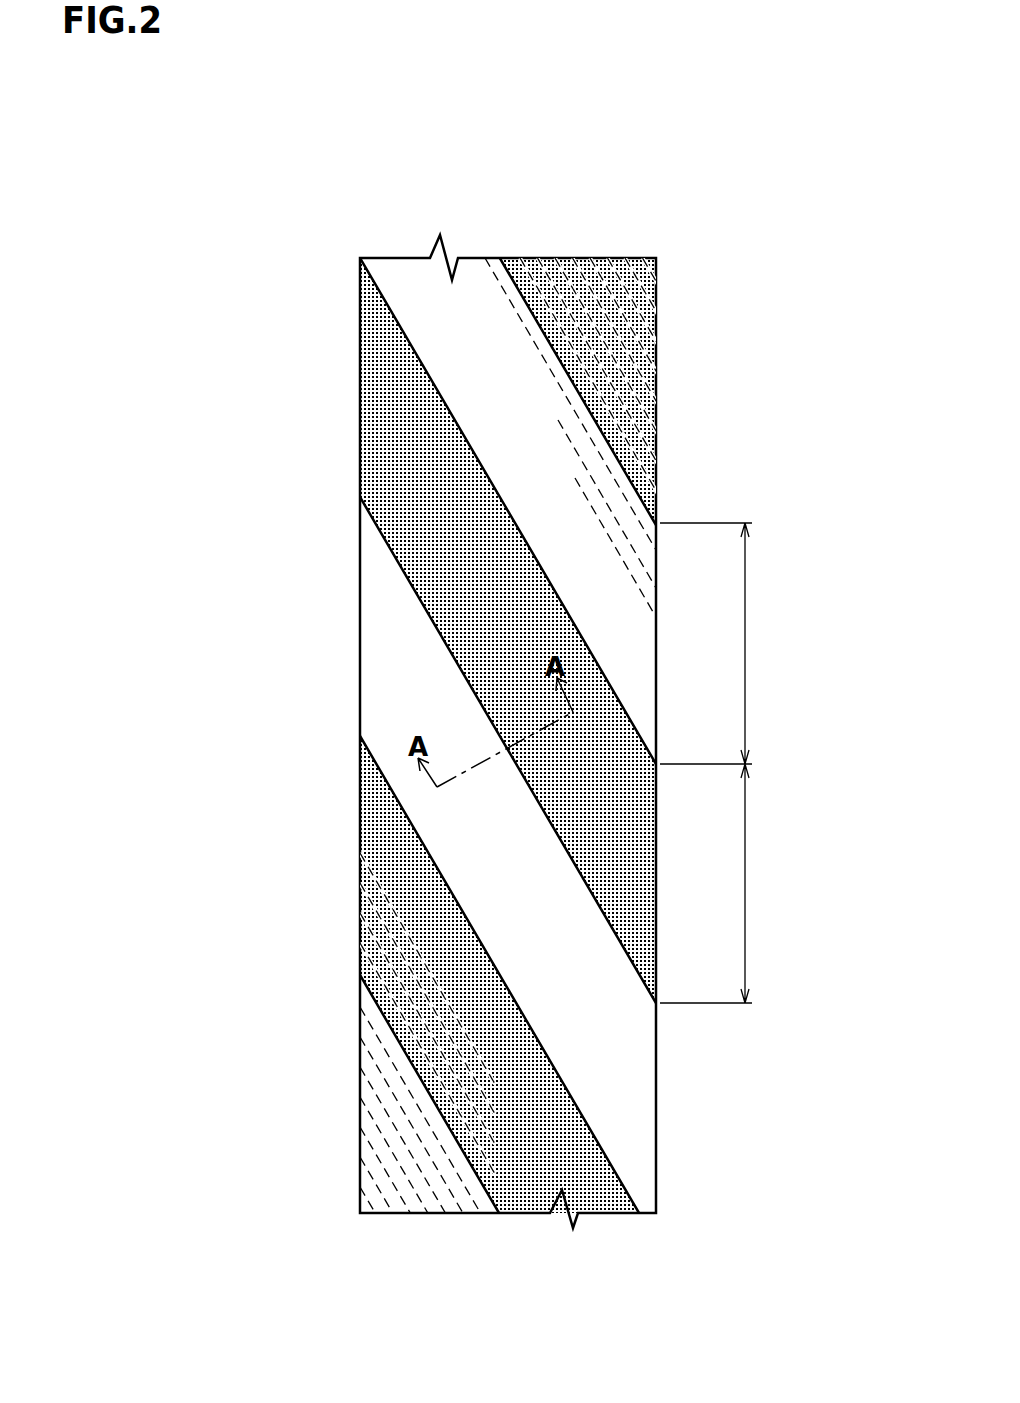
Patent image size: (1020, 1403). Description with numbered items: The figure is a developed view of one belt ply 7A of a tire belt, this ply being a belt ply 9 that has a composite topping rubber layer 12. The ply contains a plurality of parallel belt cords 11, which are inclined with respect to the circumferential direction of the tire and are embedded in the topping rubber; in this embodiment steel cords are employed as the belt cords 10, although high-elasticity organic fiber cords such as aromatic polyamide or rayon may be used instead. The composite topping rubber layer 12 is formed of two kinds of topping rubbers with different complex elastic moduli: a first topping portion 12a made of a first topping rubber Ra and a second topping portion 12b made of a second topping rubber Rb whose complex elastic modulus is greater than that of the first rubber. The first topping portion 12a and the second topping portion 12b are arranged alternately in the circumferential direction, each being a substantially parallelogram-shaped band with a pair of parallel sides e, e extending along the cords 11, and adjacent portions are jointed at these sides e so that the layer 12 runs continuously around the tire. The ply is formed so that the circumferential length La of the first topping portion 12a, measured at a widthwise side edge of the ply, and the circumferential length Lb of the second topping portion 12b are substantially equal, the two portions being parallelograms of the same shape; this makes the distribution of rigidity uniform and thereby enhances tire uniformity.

The belt ply 7A is at (604, 688).
The belt ply 9 is at (669, 236).
The composite topping rubber layer 12 is at (511, 735).
The first topping portion 12a is at (408, 460).
The second topping portion 12b is at (396, 465).
The parallel side e is at (495, 485).
The belt cord 10 is at (472, 1195).
The belt cords 11 is at (430, 1205).
The length of the first topping portion La is at (710, 643).
The length of the second topping portion Lb is at (710, 883).